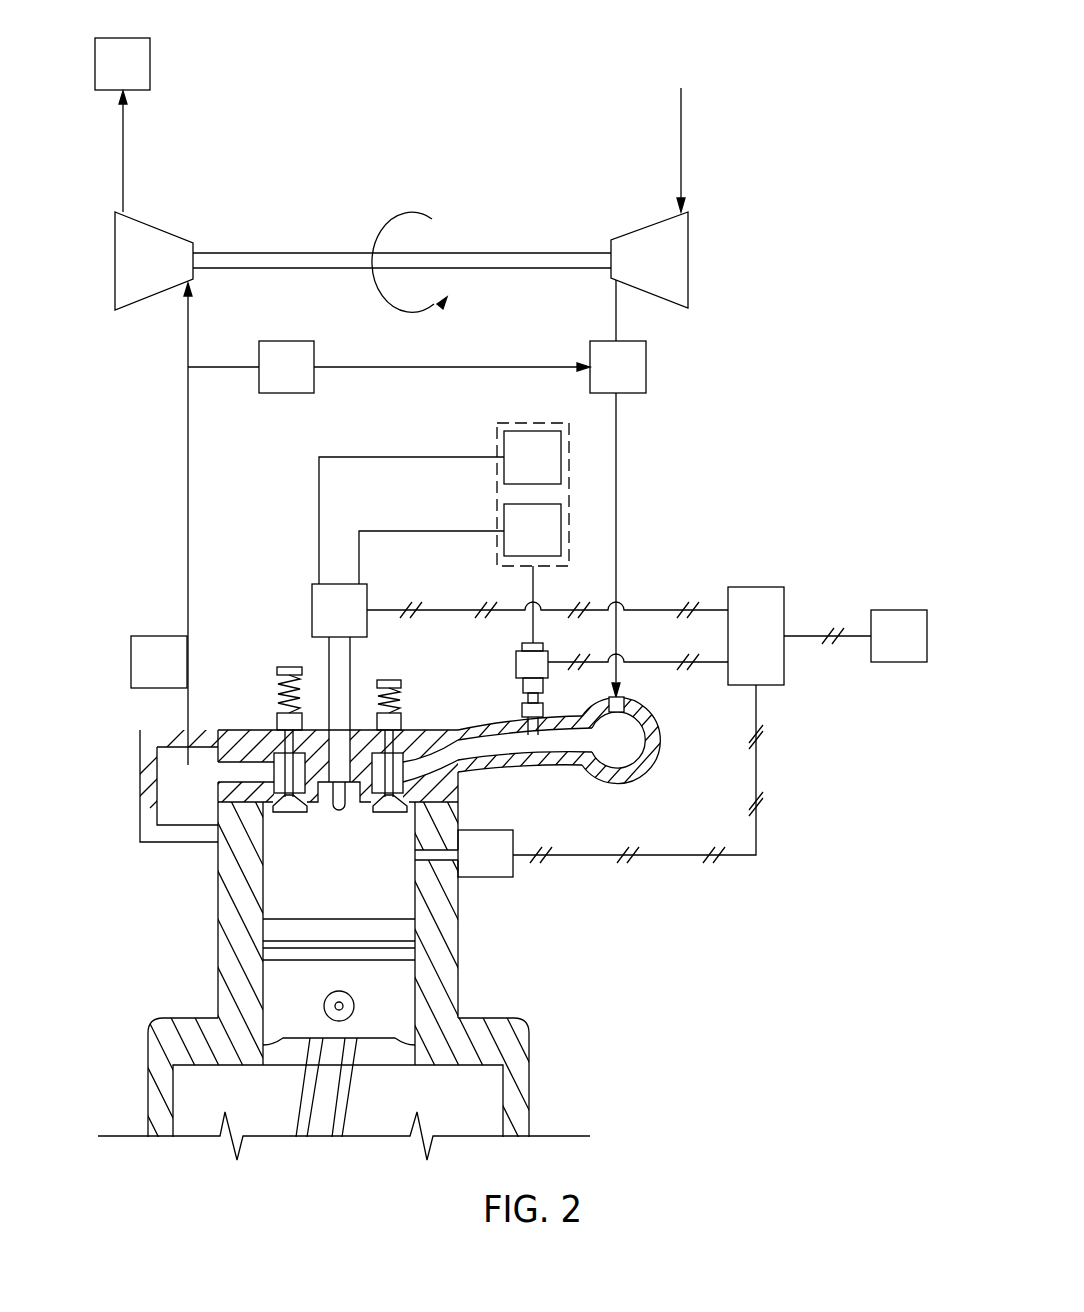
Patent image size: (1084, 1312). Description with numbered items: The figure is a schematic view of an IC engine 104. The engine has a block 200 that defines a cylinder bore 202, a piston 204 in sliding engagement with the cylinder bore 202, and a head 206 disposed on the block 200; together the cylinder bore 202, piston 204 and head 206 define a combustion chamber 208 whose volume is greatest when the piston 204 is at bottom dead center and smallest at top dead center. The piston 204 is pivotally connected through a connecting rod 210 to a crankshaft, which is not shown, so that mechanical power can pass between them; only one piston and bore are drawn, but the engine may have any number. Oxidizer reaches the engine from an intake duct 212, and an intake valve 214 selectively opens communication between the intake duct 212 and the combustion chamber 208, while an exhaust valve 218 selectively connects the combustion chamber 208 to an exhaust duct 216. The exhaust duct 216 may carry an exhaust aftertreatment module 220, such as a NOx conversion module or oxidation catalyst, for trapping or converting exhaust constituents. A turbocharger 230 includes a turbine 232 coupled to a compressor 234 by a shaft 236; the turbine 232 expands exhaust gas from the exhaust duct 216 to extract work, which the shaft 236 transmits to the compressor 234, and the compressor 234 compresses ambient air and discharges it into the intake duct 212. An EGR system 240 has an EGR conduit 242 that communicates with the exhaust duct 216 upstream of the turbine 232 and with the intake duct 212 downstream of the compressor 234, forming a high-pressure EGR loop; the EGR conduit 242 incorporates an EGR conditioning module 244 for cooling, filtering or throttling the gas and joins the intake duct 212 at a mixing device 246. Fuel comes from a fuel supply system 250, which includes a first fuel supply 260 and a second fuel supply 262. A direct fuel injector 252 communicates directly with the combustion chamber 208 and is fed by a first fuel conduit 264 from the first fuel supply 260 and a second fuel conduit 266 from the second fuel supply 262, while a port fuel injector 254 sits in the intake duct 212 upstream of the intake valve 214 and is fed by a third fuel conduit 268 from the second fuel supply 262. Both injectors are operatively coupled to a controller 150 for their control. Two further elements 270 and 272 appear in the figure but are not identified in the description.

The IC engine 104 is at (628, 36).
The controller 150 is at (770, 645).
The block 200 is at (218, 970).
The cylinder bore 202 is at (263, 898).
The piston 204 is at (400, 999).
The head 206 is at (460, 788).
The combustion chamber 208 is at (354, 862).
The connecting rod 210 is at (352, 1090).
The intake duct 212 is at (650, 713).
The intake valve 214 is at (407, 742).
The exhaust duct 216 is at (125, 147).
The exhaust valve 218 is at (273, 742).
The exhaust aftertreatment module 220 is at (136, 76).
The turbocharger 230 is at (290, 200).
The turbine 232 is at (160, 270).
The compressor 234 is at (666, 270).
The shaft 236 is at (526, 252).
The Exhaust Gas Recirculation (EGR) system 240 is at (470, 337).
The EGR conduit 242 is at (372, 369).
The EGR conditioning module 244 is at (301, 379).
The mixing device 246 is at (632, 379).
The fuel supply system 250 is at (569, 486).
The direct fuel injector 252 is at (354, 621).
The port fuel injector 254 is at (516, 660).
The first fuel supply 260 is at (546, 469).
The second fuel supply 262 is at (546, 541).
The first fuel conduit 264 is at (318, 498).
The second fuel conduit 266 is at (425, 531).
The third fuel conduit 268 is at (533, 582).
The knock sensor 270 is at (500, 866).
The sensors and actuators 272 is at (913, 647).